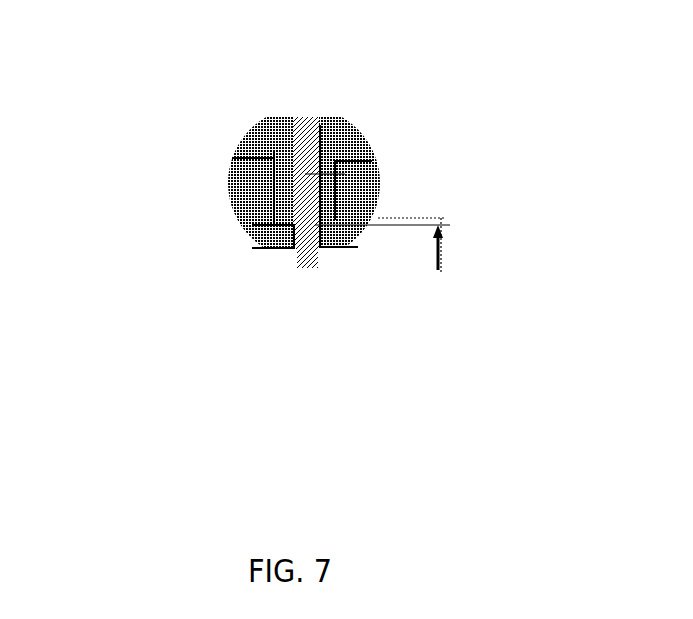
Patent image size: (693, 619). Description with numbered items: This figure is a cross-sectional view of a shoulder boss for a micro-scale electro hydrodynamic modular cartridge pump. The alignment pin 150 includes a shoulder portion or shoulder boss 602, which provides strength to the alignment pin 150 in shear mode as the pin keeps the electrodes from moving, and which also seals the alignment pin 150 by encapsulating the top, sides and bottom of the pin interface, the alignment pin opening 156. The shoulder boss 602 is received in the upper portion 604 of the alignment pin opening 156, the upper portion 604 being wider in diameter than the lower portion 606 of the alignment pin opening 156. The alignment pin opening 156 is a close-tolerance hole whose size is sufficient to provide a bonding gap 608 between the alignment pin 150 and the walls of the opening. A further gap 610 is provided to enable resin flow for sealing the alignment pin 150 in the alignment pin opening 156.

The alignment pin 150 is at (315, 135).
The alignment pin opening 156 is at (273, 150).
The shoulder boss 602 is at (290, 208).
The upper portion 604 is at (273, 223).
The lower portion 606 is at (317, 247).
The bonding gap 608 is at (340, 174).
The gap 610 is at (440, 211).